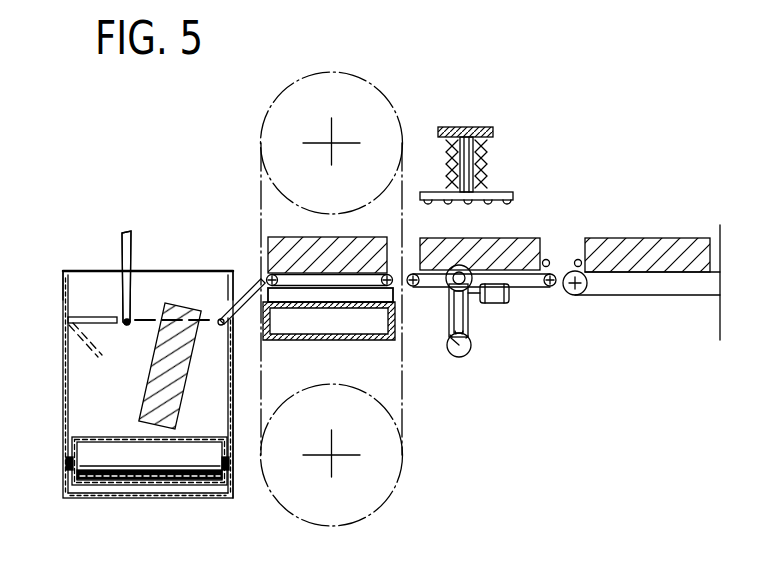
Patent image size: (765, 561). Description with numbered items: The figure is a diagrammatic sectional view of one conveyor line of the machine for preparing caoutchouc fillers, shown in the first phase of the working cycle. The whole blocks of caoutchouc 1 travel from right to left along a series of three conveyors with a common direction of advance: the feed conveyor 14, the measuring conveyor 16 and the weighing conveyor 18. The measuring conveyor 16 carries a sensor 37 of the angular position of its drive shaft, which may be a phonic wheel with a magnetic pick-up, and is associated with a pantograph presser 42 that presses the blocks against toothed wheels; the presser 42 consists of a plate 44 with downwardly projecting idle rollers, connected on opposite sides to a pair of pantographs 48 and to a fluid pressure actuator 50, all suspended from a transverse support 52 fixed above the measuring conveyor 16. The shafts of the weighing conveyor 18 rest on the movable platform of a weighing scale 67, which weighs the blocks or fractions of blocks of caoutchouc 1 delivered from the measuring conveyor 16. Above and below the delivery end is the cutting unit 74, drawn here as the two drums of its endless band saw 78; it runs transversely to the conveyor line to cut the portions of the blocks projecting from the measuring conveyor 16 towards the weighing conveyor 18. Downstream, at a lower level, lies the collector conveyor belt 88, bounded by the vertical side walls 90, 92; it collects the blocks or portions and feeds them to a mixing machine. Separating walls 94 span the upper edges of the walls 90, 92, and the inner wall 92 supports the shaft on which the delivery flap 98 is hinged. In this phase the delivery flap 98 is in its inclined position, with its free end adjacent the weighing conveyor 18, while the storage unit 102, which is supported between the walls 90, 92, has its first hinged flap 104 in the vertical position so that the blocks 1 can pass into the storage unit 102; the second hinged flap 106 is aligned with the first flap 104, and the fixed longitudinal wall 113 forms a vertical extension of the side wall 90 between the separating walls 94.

The block of caoutchouc 1 is at (183, 400).
The feed conveyor 14 is at (623, 283).
The measuring conveyor 16 is at (530, 279).
The weighing conveyor 18 is at (367, 279).
The sensor of angular position 37 is at (471, 351).
The pantograph presser 42 is at (489, 133).
The plate 44 is at (512, 197).
The pantograph 48 is at (443, 157).
The fluid pressure actuator 50 is at (482, 167).
The transverse support 52 is at (473, 128).
The weighing scale 67 is at (350, 342).
The cutting unit 74 is at (258, 121).
The endless band saw 78 is at (363, 98).
The collector conveyor belt 88 is at (140, 460).
The vertical side wall 90 is at (63, 405).
The inner vertical side wall 92 is at (233, 380).
The separating wall 94 is at (162, 283).
The delivery flap 98 is at (255, 290).
The storage unit 102 is at (110, 243).
The first hinged flap 104 is at (133, 250).
The second hinged flap 106 is at (100, 316).
The fixed longitudinal wall 113 is at (63, 288).